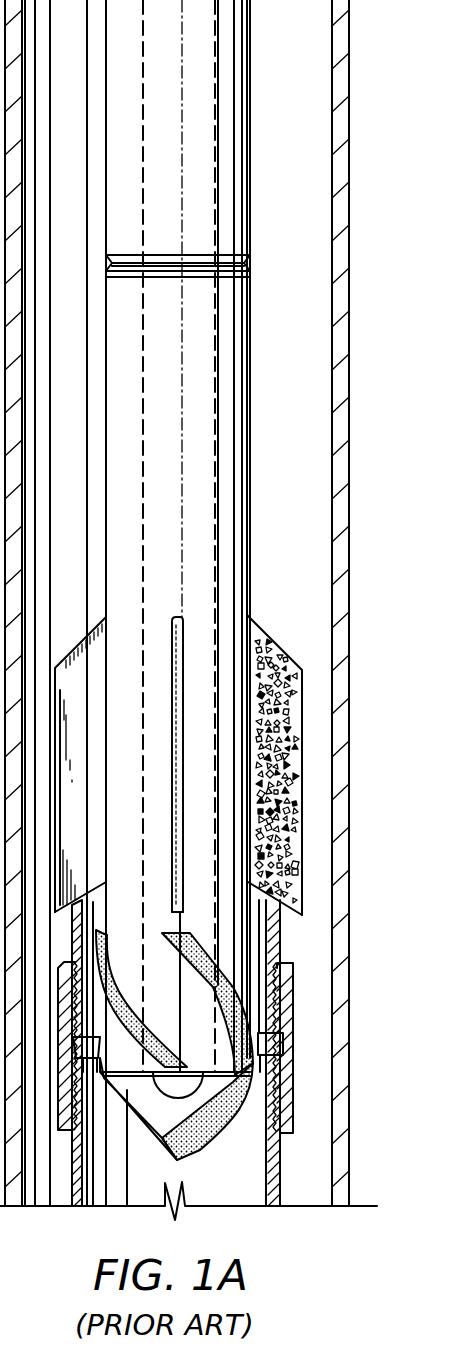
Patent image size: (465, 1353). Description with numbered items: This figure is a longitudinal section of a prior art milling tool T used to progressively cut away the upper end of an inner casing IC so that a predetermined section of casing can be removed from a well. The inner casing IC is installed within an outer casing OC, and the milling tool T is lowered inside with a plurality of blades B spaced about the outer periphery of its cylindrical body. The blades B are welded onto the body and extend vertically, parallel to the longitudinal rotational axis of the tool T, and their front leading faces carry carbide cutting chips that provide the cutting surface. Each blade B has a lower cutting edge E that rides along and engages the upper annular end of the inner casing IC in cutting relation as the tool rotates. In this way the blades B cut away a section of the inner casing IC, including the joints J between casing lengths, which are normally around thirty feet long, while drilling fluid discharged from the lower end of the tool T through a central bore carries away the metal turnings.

The milling tool T is at (230, 462).
The outer casing OC is at (341, 478).
The blades B is at (78, 664).
The lower cutting edges E is at (176, 915).
The joints J is at (293, 1110).
The inner casing IC is at (280, 1190).